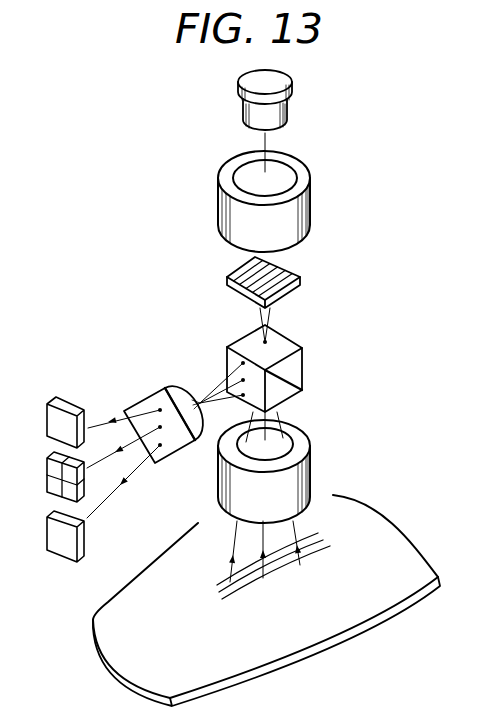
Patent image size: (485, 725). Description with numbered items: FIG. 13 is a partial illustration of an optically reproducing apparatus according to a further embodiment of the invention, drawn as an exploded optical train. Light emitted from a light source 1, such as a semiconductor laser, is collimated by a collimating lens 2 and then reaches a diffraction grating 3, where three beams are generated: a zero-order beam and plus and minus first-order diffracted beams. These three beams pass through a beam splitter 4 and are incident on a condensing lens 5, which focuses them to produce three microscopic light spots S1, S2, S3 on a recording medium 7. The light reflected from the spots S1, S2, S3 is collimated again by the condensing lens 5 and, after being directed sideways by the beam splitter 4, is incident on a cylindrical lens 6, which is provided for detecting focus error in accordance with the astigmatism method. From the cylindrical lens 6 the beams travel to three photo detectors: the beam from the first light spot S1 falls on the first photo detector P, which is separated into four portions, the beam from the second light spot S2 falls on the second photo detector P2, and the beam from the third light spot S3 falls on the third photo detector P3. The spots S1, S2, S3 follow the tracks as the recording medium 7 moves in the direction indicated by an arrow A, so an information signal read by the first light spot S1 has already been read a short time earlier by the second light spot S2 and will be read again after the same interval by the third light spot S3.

The light source 1 is at (289, 118).
The collimating lens 2 is at (310, 212).
The diffraction grating 3 is at (301, 276).
The beam splitter 4 is at (294, 360).
The condensing lens 5 is at (310, 461).
The cylindrical lens 6 is at (155, 398).
The recording medium 7 is at (372, 513).
The first photo detector P is at (44, 470).
The second photo detector P2 is at (68, 396).
The third photo detector P3 is at (57, 558).
The first light spot S1 is at (264, 579).
The second light spot S2 is at (300, 565).
The third light spot S3 is at (221, 584).
The arrow indicating direction of movement A is at (393, 640).